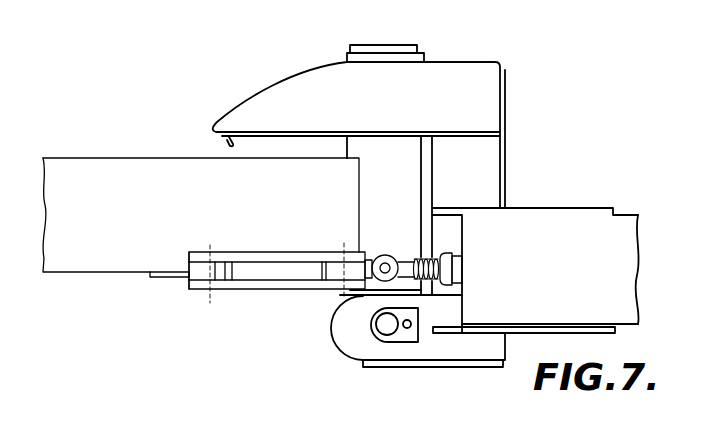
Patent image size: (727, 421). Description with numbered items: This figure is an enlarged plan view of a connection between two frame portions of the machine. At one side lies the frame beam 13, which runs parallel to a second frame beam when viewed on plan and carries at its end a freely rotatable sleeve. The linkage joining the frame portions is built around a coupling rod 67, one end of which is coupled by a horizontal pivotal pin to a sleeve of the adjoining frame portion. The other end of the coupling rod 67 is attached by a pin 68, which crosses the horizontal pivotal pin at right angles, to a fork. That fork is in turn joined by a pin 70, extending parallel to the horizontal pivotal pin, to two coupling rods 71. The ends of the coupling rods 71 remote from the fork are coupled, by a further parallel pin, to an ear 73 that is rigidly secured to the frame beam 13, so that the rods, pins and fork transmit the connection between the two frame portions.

The frame beam 13 is at (94, 244).
The coupling rod 67 is at (430, 255).
The pin 68 is at (385, 255).
The pin 70 is at (344, 243).
The coupling rods 71 is at (268, 285).
The ear 73 is at (198, 267).